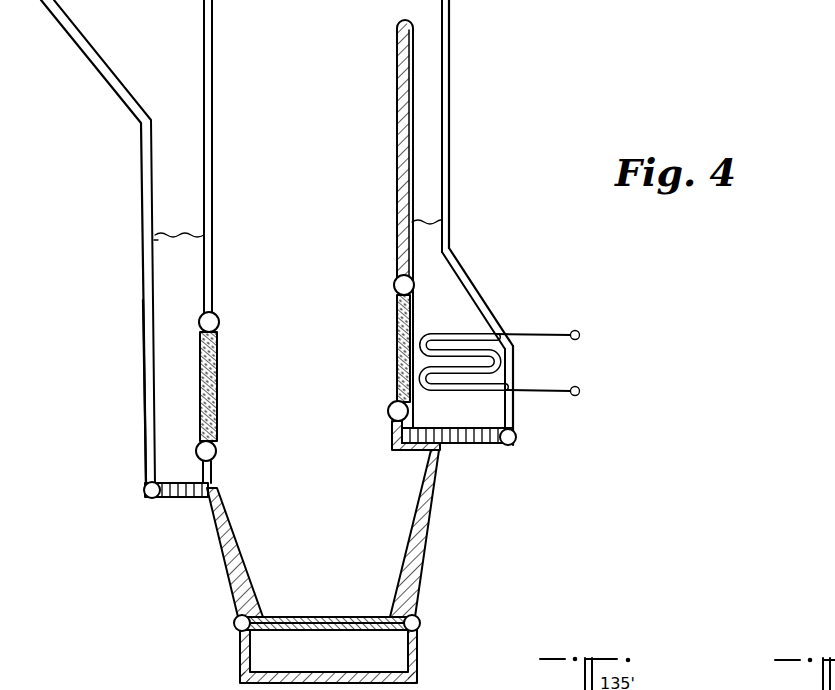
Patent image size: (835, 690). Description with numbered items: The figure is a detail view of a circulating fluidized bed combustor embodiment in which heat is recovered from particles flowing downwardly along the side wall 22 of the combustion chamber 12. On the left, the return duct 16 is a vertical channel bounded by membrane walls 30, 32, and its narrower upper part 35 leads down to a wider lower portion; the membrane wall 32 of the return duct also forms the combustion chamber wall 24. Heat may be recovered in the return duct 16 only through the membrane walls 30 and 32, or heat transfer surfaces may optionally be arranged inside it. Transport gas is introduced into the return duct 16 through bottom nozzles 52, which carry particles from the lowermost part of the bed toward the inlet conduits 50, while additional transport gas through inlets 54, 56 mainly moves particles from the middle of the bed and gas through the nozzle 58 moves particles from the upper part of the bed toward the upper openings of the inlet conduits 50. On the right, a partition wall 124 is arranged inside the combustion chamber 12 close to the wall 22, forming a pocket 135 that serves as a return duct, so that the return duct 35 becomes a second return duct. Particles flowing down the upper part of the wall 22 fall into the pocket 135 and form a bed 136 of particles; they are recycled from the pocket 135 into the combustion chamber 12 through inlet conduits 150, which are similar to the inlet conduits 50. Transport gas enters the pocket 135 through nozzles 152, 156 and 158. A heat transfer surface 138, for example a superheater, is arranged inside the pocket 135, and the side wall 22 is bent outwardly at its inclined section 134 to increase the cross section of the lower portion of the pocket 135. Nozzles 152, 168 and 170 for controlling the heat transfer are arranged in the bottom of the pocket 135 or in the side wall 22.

The combustion chamber 12 is at (313, 180).
The return duct 16 is at (166, 165).
The combustion chamber wall 22 is at (446, 200).
The combustion chamber wall 24 is at (211, 72).
The membrane wall of return duct 30 is at (149, 248).
The membrane wall of return duct 32 is at (207, 282).
The upper part of return duct 35 is at (172, 202).
The inlet conduits 50 is at (217, 338).
The bottom nozzles 52 is at (185, 496).
The transport gas inlet 54 is at (146, 450).
The transport gas inlet 56 is at (146, 400).
The transport gas nozzle 58 is at (146, 332).
The partition wall 124 is at (398, 66).
The inclined wall section 134 is at (437, 280).
The pocket 135 is at (431, 85).
The bed of particles 136 is at (477, 425).
The heat transfer surface 138 is at (550, 334).
The inlet conduits 150 is at (398, 352).
The nozzles 152 is at (487, 442).
The nozzles 156 is at (507, 316).
The nozzles 158 is at (478, 282).
The nozzles 168 is at (518, 418).
The nozzles 170 is at (516, 370).